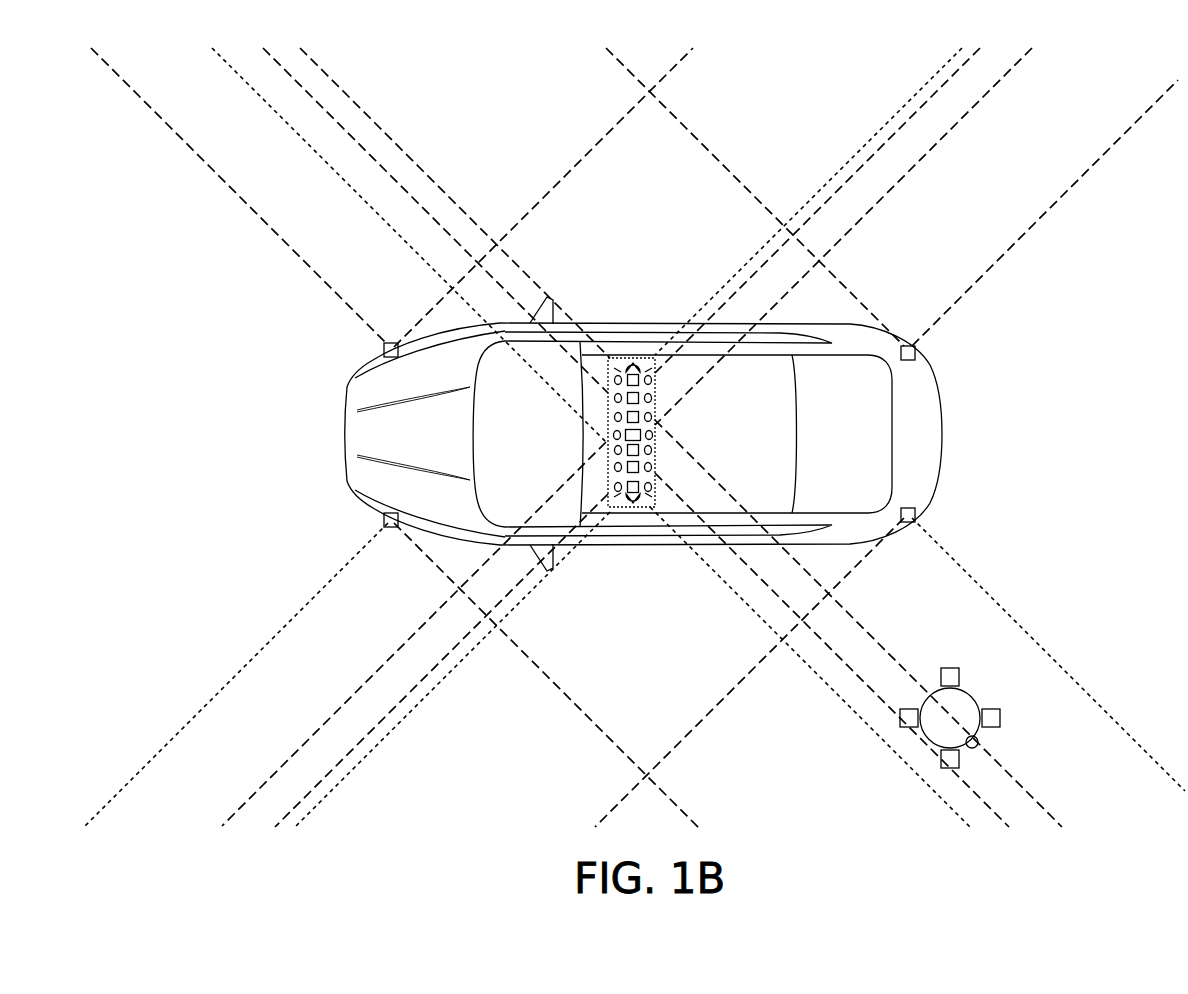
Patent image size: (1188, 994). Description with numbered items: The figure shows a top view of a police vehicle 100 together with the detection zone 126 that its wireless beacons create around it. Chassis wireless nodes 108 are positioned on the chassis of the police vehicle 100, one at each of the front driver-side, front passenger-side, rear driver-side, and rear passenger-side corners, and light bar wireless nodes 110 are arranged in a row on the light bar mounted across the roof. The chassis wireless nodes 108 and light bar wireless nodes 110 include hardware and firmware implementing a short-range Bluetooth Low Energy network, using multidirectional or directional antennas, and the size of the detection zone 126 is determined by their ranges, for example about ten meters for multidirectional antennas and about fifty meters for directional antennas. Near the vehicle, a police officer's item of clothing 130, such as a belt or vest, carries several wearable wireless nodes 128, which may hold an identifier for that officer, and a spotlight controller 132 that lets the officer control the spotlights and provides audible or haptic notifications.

The police vehicle 100 is at (943, 433).
The chassis wireless nodes 108 is at (391, 343).
The light bar wireless nodes 110 is at (633, 366).
The detection zone 126 is at (1102, 351).
The wearable wireless nodes 128 is at (950, 667).
The item of clothing 130 is at (928, 697).
The spotlight controller 132 is at (977, 746).